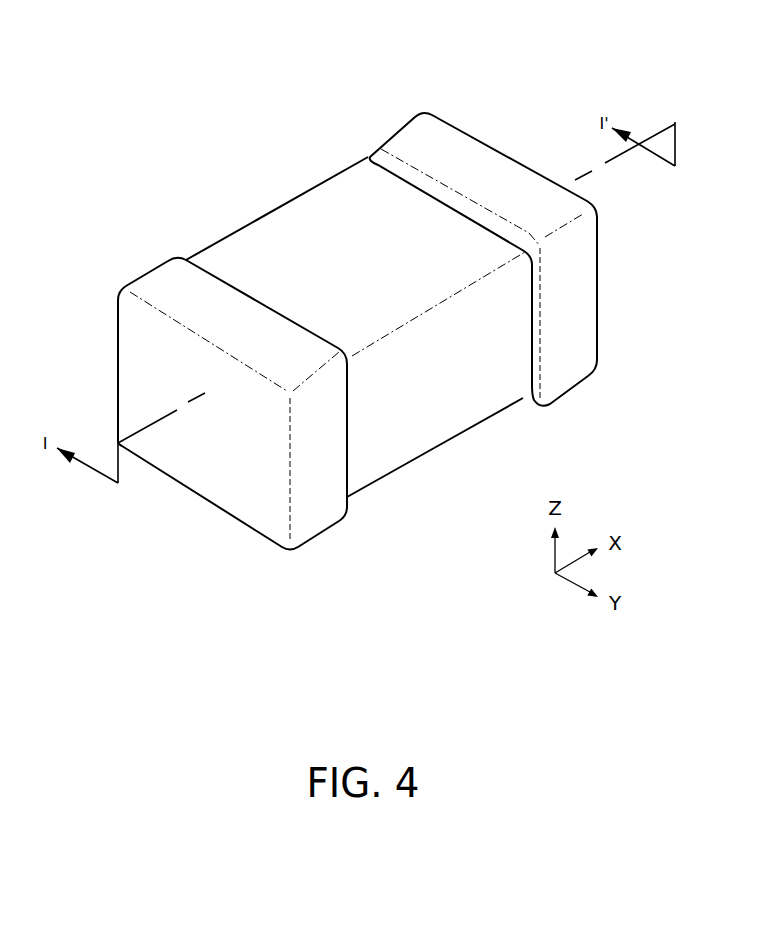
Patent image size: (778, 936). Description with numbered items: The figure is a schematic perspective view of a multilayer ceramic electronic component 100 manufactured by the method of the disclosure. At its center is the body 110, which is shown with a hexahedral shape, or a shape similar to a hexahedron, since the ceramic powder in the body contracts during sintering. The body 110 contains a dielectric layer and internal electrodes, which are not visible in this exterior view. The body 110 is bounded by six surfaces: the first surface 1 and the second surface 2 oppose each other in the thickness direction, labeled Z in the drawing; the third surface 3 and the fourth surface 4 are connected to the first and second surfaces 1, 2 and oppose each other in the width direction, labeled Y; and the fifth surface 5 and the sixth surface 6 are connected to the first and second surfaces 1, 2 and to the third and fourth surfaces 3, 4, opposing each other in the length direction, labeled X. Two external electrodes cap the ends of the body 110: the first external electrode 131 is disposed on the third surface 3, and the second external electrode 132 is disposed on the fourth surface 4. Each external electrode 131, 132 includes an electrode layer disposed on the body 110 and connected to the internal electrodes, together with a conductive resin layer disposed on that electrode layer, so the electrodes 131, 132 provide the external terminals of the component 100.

The multilayer ceramic electronic component 100 is at (197, 27).
The body 110 is at (300, 213).
The first external electrode 131 is at (156, 278).
The second external electrode 132 is at (403, 133).
The first surface 1 is at (386, 445).
The second surface 2 is at (344, 193).
The third surface 3 is at (180, 480).
The fourth surface 4 is at (570, 296).
The fifth surface 5 is at (470, 412).
The sixth surface 6 is at (268, 248).